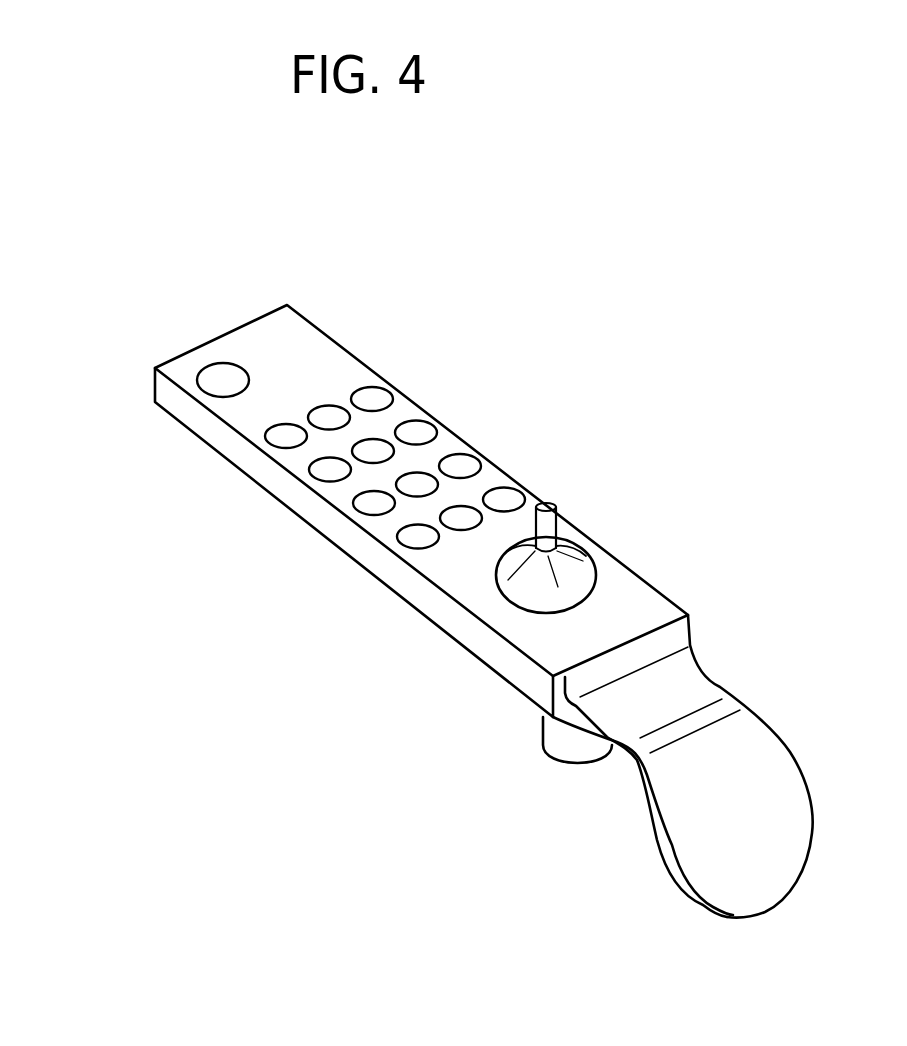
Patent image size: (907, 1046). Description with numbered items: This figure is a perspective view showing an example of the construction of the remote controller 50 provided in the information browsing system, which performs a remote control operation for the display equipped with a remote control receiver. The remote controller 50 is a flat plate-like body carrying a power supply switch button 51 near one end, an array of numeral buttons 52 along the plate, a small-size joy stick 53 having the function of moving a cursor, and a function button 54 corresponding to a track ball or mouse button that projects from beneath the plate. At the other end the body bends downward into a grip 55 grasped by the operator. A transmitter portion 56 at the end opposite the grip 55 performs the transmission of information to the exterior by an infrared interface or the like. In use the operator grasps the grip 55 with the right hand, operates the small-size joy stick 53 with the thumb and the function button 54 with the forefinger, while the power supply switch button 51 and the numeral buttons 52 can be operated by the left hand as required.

The remote controller 50 is at (623, 278).
The power supply switch button 51 is at (208, 378).
The numeral buttons 52 is at (412, 428).
The small-size joy stick 53 is at (580, 566).
The function button 54 is at (550, 737).
The grip 55 is at (787, 782).
The transmitter portion 56 is at (246, 328).